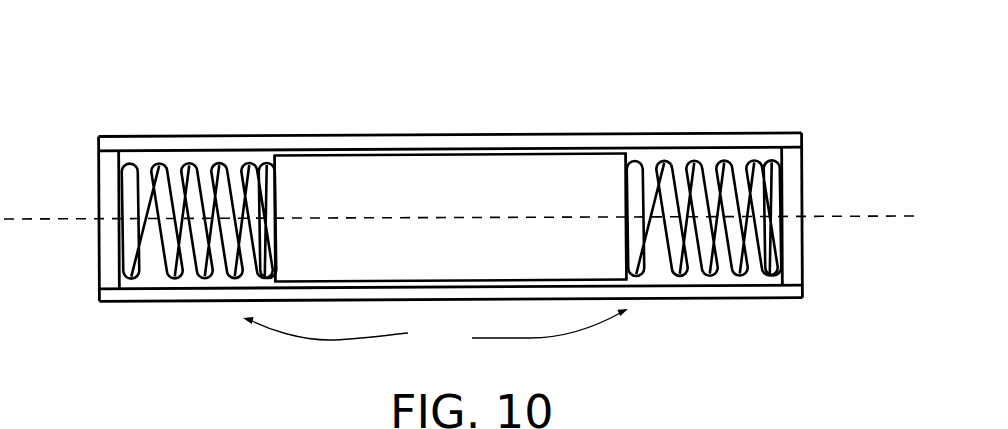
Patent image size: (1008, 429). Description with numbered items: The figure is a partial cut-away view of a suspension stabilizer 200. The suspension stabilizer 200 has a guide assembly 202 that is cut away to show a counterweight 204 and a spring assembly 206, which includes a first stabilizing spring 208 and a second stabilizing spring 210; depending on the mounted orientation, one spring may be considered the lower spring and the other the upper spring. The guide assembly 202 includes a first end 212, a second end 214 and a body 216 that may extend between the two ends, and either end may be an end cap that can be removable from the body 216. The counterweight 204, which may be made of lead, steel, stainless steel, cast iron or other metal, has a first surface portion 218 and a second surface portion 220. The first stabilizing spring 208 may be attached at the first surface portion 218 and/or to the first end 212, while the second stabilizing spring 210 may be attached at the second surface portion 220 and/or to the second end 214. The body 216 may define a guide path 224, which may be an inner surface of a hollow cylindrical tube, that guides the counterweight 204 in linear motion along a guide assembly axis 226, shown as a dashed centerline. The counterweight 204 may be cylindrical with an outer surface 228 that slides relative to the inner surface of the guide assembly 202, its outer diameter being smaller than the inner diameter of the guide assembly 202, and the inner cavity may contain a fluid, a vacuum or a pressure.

The suspension stabilizer 200 is at (588, 64).
The guide assembly 202 is at (454, 210).
The counterweight 204 is at (489, 173).
The spring assembly 206 is at (435, 330).
The first stabilizing spring 208 is at (177, 160).
The second stabilizing spring 210 is at (730, 164).
The first end 212 is at (98, 280).
The second end 214 is at (806, 274).
The body 216 is at (763, 292).
The first surface portion 218 is at (269, 152).
The second surface portion 220 is at (628, 160).
The guide path 224 is at (640, 285).
The guide assembly axis 226 is at (832, 215).
The outer surface 228 is at (380, 160).